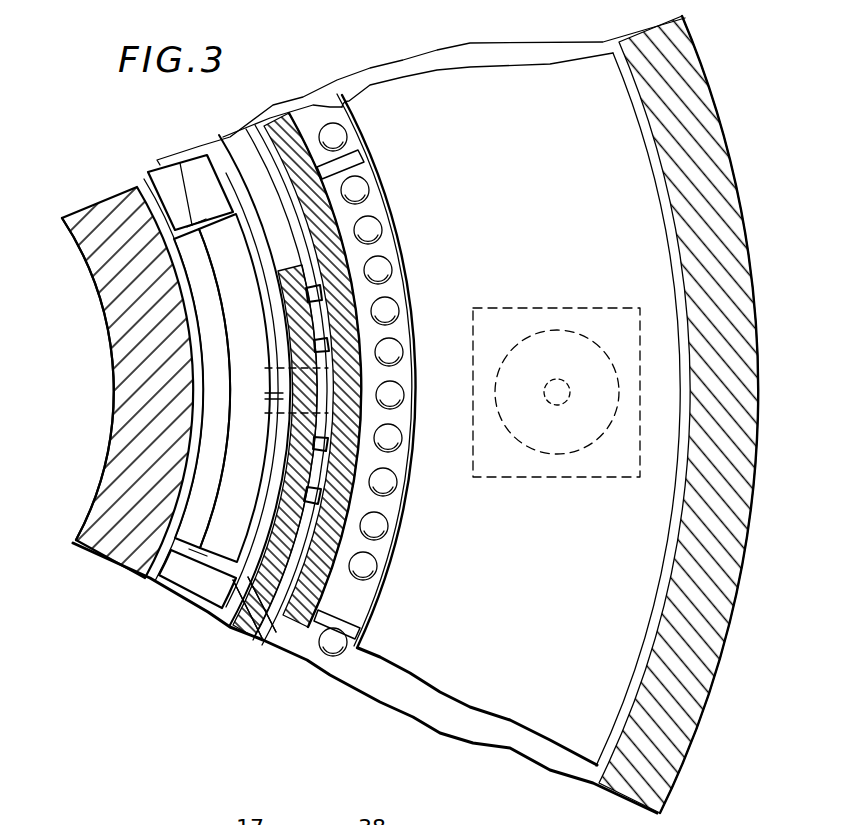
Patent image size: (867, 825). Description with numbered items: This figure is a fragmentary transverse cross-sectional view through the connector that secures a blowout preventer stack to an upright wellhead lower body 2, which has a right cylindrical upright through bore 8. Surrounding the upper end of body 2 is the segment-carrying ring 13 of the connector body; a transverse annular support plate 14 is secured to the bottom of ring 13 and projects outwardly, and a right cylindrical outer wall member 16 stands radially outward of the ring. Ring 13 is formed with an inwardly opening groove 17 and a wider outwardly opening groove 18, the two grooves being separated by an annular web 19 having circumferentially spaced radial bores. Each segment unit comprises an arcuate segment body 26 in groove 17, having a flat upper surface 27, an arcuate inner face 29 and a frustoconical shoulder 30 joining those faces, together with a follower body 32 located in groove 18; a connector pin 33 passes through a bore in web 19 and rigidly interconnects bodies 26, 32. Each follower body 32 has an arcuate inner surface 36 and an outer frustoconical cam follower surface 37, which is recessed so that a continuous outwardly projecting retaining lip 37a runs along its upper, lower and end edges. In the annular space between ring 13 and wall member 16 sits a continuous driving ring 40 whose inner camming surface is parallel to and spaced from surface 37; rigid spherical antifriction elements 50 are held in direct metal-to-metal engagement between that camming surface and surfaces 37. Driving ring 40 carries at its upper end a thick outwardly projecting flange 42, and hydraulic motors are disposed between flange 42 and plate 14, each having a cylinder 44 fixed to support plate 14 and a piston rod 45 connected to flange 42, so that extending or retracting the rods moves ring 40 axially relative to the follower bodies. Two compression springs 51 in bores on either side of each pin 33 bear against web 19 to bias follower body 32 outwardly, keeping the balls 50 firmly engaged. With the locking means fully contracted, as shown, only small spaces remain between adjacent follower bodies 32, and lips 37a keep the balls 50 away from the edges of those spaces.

The wellhead lower body 2 is at (100, 560).
The through bore 8 is at (107, 448).
The segment-carrying ring 13 is at (212, 623).
The support plate 14 is at (512, 760).
The outer wall member 16 is at (718, 150).
The inwardly opening groove 17 is at (228, 597).
The outwardly opening groove 18 is at (265, 640).
The web 19 is at (238, 606).
The segment body 26 is at (152, 168).
The upper surface 27 is at (243, 350).
The inner face 29 is at (198, 457).
The shoulder 30 is at (217, 433).
The follower body 32 is at (340, 222).
The connector pin 33 is at (263, 425).
The inner surface 36 is at (317, 248).
The cam follower surface 37 is at (378, 258).
The retaining lip 37a is at (357, 172).
The driving ring 40 is at (517, 62).
The flange 42 is at (600, 195).
The cylinder 44 is at (568, 455).
The piston rod 45 is at (556, 380).
The antifriction elements 50 is at (405, 345).
The compression spring 51 is at (316, 302).